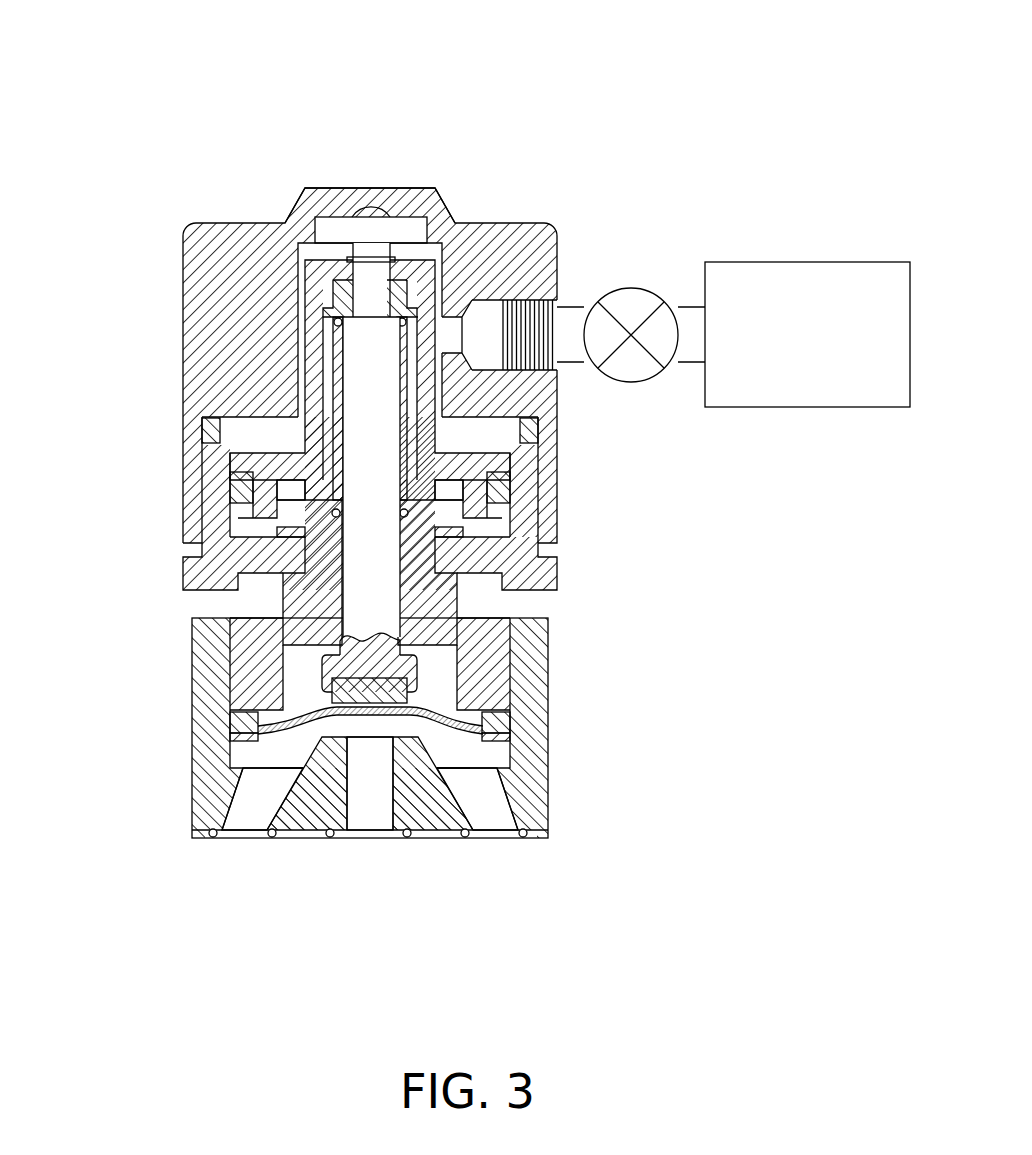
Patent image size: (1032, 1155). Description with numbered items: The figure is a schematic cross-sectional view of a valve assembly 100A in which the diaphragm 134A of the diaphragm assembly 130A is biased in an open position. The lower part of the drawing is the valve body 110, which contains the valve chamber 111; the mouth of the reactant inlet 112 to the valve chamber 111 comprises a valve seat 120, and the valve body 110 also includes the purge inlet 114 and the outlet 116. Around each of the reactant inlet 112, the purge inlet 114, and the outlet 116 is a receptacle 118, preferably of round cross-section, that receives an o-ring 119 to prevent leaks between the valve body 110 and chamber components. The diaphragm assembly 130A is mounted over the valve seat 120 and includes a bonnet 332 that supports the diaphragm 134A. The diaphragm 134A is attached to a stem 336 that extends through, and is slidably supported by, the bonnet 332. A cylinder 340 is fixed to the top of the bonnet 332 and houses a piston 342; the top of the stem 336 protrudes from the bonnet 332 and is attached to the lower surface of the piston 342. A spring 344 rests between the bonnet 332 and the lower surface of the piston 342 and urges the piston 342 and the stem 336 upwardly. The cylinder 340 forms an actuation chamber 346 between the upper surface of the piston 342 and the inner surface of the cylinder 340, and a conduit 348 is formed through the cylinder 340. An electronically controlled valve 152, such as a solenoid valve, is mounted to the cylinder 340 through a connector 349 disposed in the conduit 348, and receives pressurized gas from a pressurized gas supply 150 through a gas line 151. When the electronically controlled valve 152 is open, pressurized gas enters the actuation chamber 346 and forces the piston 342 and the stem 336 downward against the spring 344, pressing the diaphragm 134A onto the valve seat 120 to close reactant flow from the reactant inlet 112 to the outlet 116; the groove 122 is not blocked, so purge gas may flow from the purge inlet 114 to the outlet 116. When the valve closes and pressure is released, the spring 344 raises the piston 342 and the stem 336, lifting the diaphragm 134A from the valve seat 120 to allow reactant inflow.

The valve assembly 100A is at (479, 500).
The diaphragm assembly 130A is at (373, 411).
The cylinder 340 is at (183, 293).
The actuation chamber 346 is at (438, 190).
The conduit 348 is at (536, 298).
The connector 349 is at (568, 303).
The electronically controlled valve 152 is at (640, 289).
The gas line 151 is at (690, 305).
The pressurized gas supply 150 is at (830, 407).
The spring 344 is at (337, 412).
The piston 342 is at (472, 458).
The stem 336 is at (373, 468).
The bonnet 332 is at (478, 620).
The diaphragm 134A is at (463, 690).
The valve seat 120 is at (483, 724).
The valve chamber 111 is at (260, 740).
The valve body 110 is at (333, 805).
The reactant inlet 112 is at (370, 810).
The purge inlet 114 is at (488, 813).
The outlet 116 is at (248, 820).
The receptacle 118 is at (180, 826).
The o-ring 119 is at (210, 840).
The groove 122 is at (442, 752).